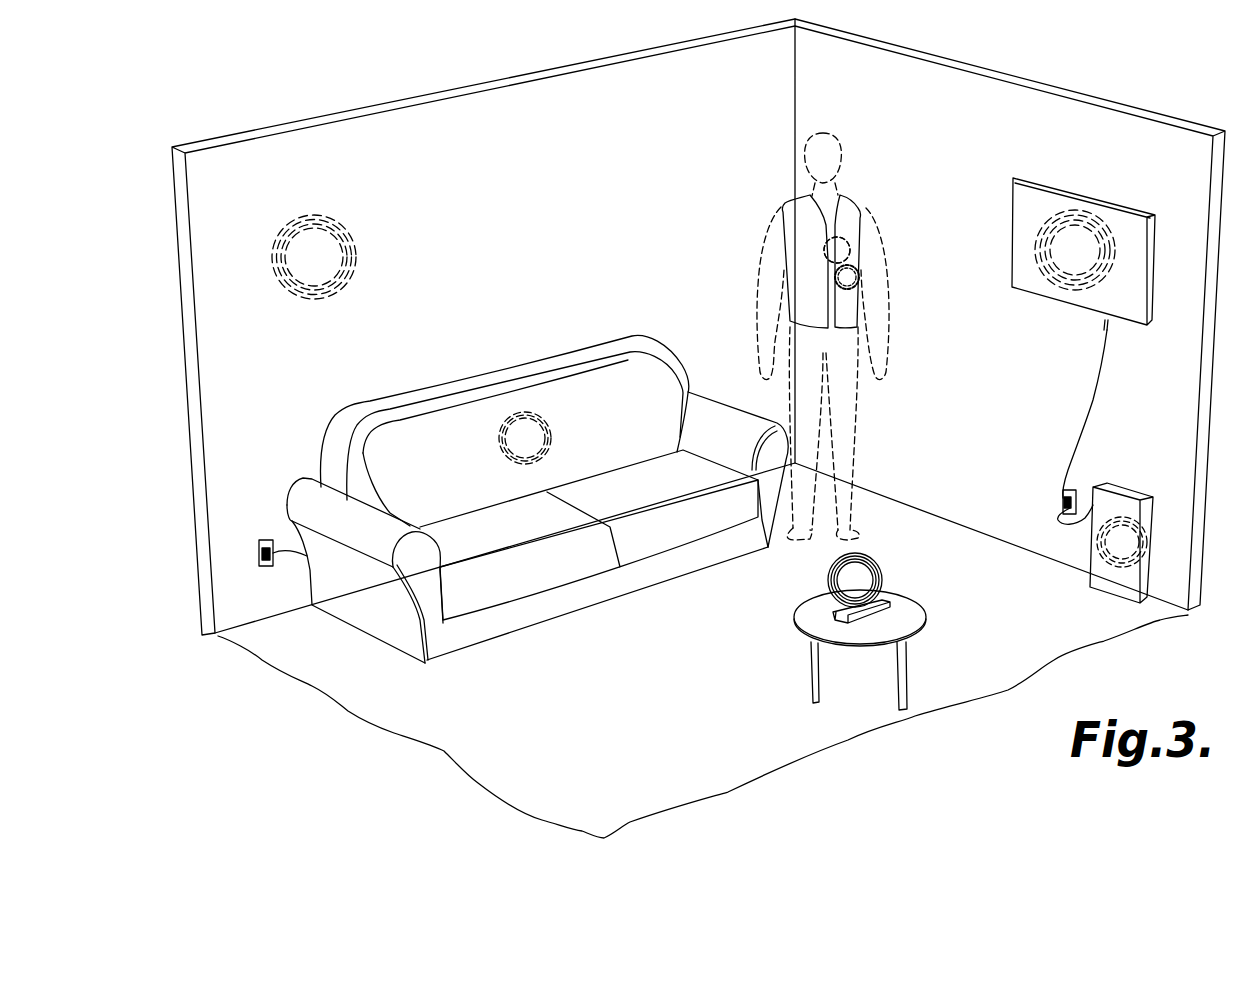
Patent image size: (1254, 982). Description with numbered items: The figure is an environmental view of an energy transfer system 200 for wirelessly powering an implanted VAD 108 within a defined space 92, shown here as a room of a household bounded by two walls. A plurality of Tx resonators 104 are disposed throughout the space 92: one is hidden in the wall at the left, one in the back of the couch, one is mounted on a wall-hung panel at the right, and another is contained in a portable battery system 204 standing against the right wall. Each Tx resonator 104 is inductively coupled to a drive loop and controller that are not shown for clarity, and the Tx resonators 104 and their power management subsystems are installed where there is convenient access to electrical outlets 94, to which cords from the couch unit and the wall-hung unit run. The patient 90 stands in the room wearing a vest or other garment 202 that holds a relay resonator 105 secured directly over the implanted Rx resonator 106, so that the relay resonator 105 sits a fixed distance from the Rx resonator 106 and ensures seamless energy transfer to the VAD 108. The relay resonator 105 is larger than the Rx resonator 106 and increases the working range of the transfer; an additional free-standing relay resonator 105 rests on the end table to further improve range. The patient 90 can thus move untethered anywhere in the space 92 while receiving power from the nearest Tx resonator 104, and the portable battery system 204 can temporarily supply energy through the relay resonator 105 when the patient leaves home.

The patient 90 is at (847, 148).
The space 92 is at (1070, 107).
The electrical outlet 94 is at (262, 542).
The Tx resonator 104 is at (347, 232).
The relay resonator 105 is at (878, 563).
The Rx resonator 106 is at (852, 240).
The VAD 108 is at (837, 250).
The energy transfer system 200 is at (700, 428).
The garment 202 is at (856, 201).
The portable battery system 204 is at (1112, 485).